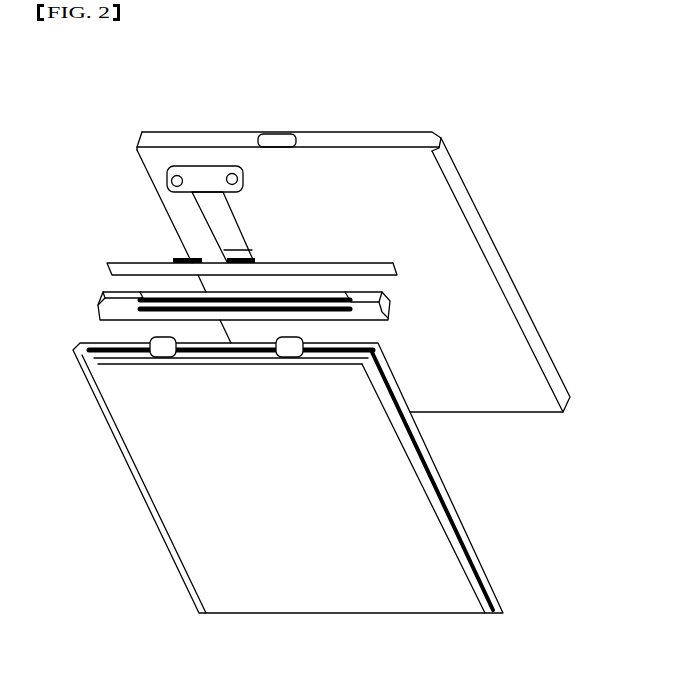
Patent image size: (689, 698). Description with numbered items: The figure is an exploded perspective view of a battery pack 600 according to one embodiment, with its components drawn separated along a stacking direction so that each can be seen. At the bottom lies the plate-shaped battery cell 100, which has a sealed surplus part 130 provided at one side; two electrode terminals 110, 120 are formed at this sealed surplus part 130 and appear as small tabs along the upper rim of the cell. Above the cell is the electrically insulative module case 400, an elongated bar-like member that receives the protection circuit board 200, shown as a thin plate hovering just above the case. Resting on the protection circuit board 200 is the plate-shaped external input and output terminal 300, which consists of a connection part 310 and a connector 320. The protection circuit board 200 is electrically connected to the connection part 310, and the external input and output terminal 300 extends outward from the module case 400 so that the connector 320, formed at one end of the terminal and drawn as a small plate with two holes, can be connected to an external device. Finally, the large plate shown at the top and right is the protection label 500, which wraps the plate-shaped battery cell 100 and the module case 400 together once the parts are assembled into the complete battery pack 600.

The battery pack 600 is at (118, 120).
The protection label 500 is at (470, 190).
The external input and output terminal 300 is at (88, 168).
The connector 320 is at (205, 186).
The connection part 310 is at (227, 228).
The protection circuit board 200 is at (98, 266).
The module case 400 is at (88, 308).
The plate-shaped battery cell 100 is at (288, 498).
The electrode terminal 110 is at (162, 357).
The electrode terminal 120 is at (288, 357).
The sealed surplus part 130 is at (226, 362).